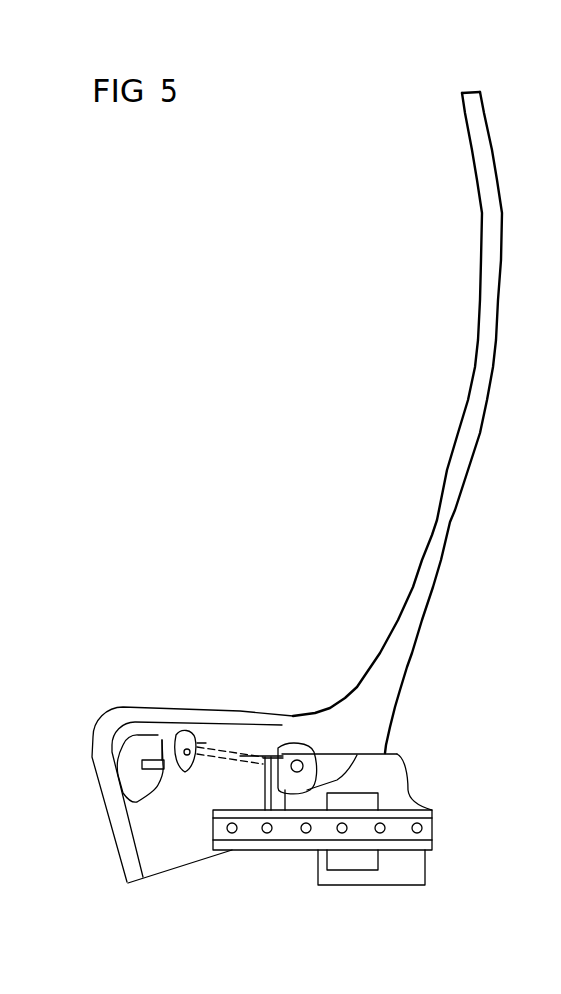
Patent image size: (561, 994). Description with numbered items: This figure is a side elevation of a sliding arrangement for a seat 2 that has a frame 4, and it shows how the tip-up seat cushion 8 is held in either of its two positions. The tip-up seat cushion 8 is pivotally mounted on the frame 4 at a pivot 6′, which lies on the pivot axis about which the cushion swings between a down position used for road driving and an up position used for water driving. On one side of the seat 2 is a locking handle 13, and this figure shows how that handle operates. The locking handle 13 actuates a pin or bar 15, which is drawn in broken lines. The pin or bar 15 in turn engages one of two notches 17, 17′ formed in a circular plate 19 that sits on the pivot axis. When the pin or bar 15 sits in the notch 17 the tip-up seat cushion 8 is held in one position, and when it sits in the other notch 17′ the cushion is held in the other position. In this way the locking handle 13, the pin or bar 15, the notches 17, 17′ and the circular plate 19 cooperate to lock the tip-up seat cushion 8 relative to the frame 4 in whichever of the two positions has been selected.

The seat 2 is at (437, 302).
The frame 4 is at (449, 514).
The pivot 6′ is at (318, 753).
The tip-up seat cushion 8 is at (180, 838).
The locking handle 13 is at (162, 760).
The pin or bar 15 is at (222, 740).
The notch 17 is at (265, 737).
The notch 17′ is at (283, 750).
The circular plate 19 is at (341, 772).